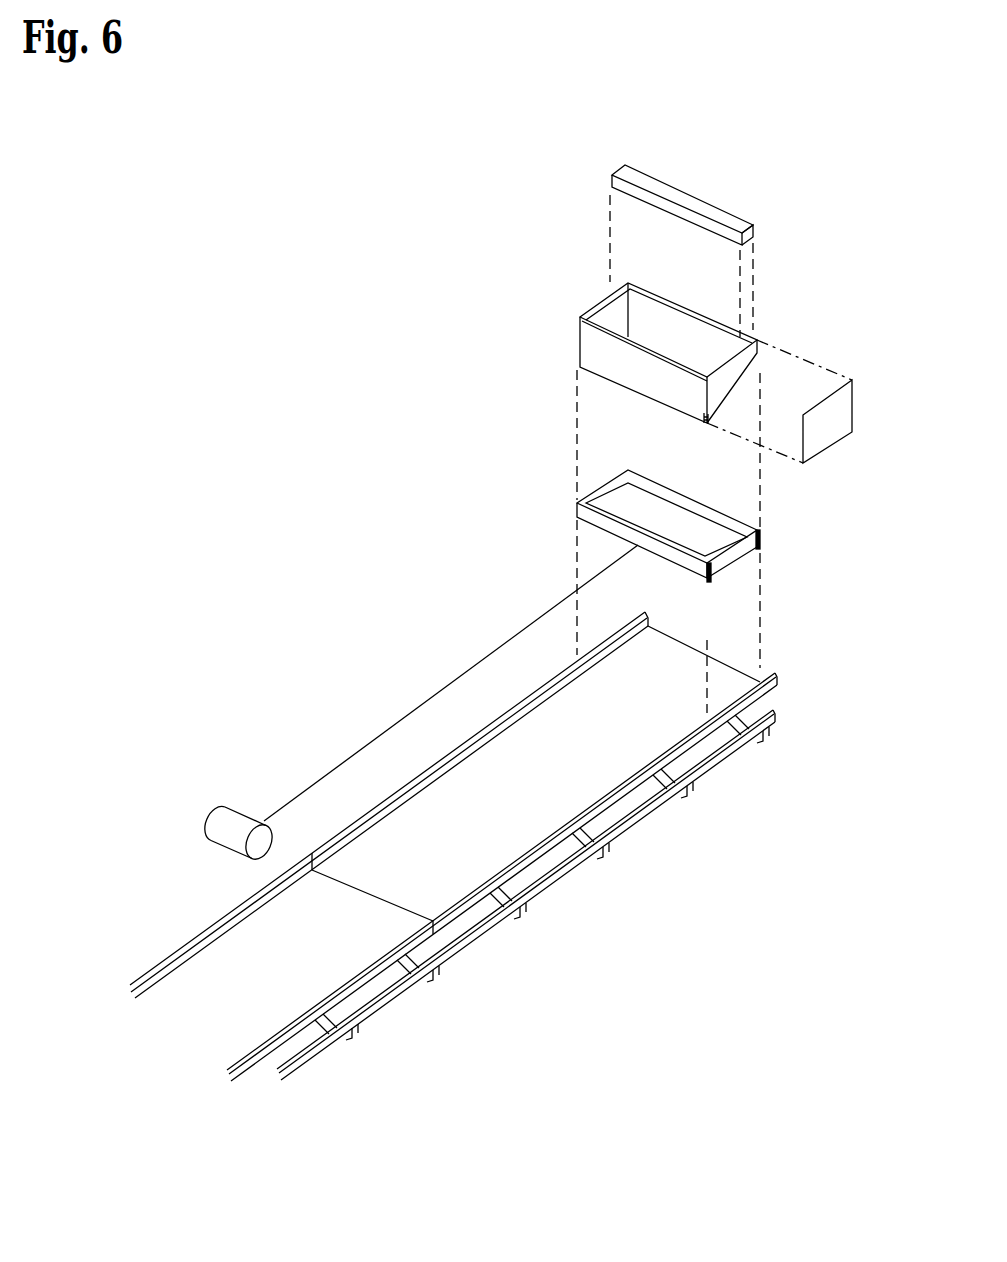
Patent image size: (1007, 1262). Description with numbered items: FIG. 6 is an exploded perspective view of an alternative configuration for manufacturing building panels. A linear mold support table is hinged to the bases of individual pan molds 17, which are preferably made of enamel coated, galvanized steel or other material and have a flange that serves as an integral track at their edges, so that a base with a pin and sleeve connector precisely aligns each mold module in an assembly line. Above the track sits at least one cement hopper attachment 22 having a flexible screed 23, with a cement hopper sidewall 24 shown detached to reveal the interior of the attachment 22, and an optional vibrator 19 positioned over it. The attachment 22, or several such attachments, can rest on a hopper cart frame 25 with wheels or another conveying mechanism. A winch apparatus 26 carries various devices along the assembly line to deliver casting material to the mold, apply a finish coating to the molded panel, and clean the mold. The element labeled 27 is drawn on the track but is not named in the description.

The pan mold 17 is at (519, 842).
The vibrator 19 is at (700, 205).
The cement hopper attachment 22 is at (620, 356).
The flexible screed 23 is at (694, 418).
The cement hopper sidewall 24 is at (830, 426).
The hopper cart frame 25 is at (628, 512).
The winch apparatus 26 is at (233, 833).
The mounting bracket 27 is at (628, 834).